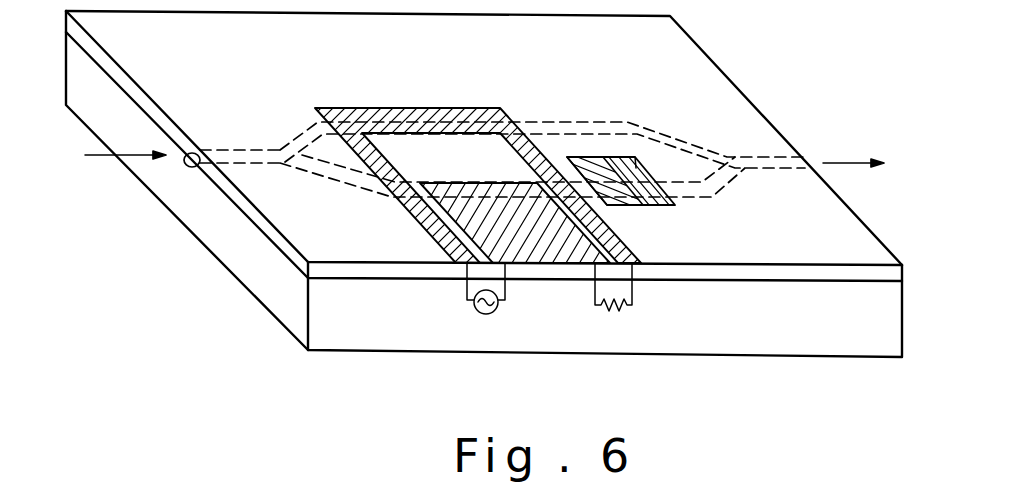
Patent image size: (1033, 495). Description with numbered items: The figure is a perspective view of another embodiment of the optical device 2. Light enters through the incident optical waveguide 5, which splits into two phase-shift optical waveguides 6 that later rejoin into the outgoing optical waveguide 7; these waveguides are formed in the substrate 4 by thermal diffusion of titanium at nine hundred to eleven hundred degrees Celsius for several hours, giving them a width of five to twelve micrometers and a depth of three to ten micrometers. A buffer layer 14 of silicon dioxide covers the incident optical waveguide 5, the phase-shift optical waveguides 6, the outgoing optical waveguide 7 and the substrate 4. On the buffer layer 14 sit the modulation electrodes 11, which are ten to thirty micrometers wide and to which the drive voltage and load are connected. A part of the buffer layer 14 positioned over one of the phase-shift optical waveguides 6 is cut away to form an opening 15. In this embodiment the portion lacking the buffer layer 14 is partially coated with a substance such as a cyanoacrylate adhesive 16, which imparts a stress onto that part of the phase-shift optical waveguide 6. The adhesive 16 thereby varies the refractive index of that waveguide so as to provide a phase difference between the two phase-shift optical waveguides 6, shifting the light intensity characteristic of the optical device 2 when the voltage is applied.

The optical device 2 is at (746, 44).
The substrate 4 is at (820, 330).
The incident optical waveguide 5 is at (237, 148).
The phase-shift optical waveguides 6 is at (547, 122).
The outgoing optical waveguide 7 is at (768, 157).
The modulation electrodes 11 is at (565, 375).
The buffer layer 14 is at (870, 275).
The opening 15 is at (640, 176).
The cyanoacrylate adhesive 16 is at (597, 157).